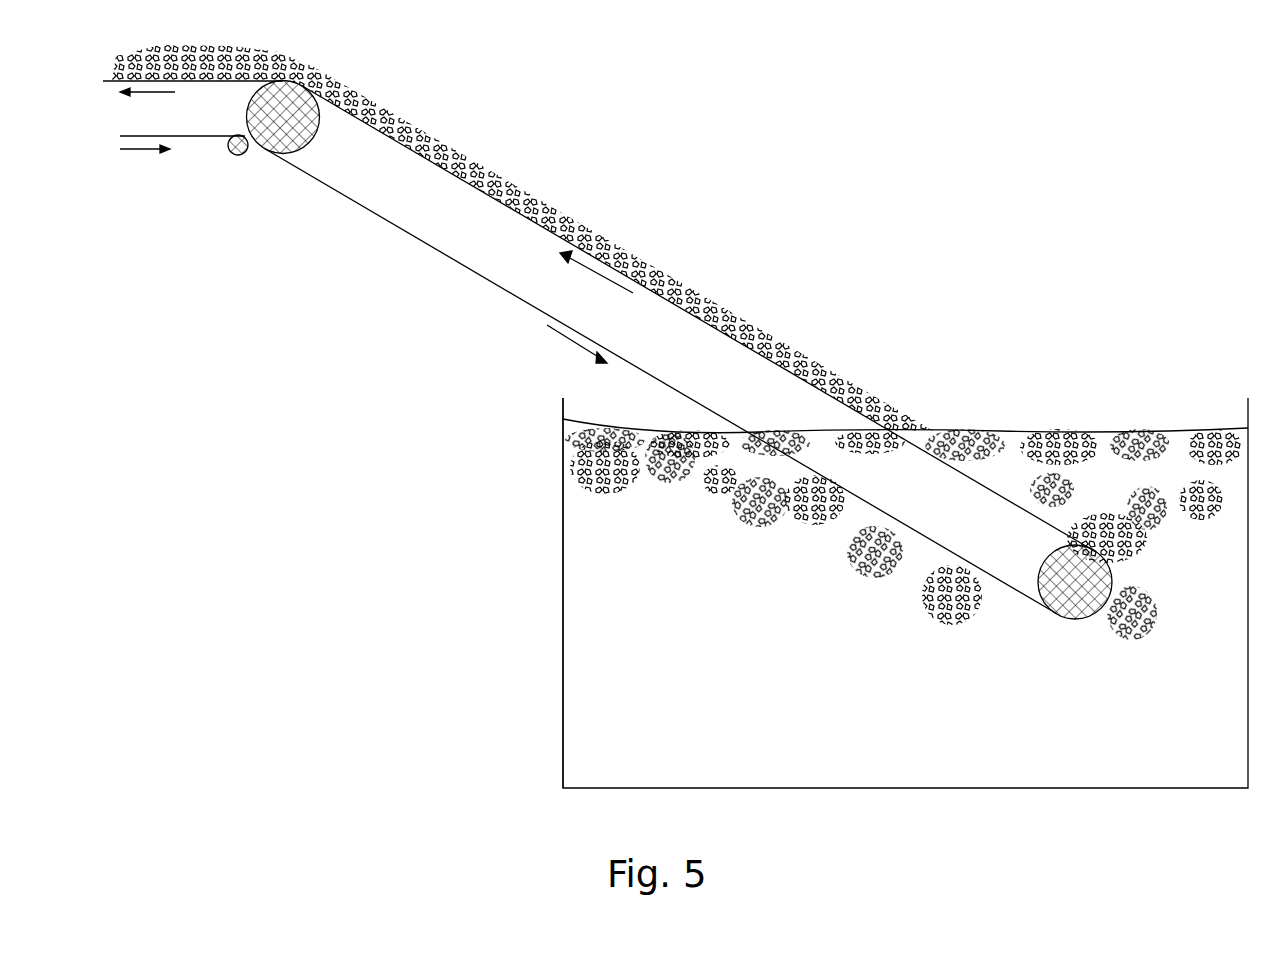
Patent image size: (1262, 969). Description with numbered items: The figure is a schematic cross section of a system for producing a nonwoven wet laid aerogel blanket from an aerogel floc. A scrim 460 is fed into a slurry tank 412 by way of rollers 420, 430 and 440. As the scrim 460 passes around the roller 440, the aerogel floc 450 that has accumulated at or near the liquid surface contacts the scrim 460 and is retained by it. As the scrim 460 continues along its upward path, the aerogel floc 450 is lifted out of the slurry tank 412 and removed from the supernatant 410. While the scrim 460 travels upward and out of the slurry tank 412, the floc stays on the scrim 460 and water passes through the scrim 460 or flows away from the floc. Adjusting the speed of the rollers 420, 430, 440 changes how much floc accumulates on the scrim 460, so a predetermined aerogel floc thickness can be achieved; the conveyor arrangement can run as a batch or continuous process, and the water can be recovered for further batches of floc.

The supernatant 410 is at (926, 764).
The slurry tank 412 is at (561, 588).
The roller 420 is at (238, 156).
The roller 430 is at (317, 127).
The roller 440 is at (1112, 580).
The aerogel floc 450 is at (730, 307).
The scrim 460 is at (200, 82).